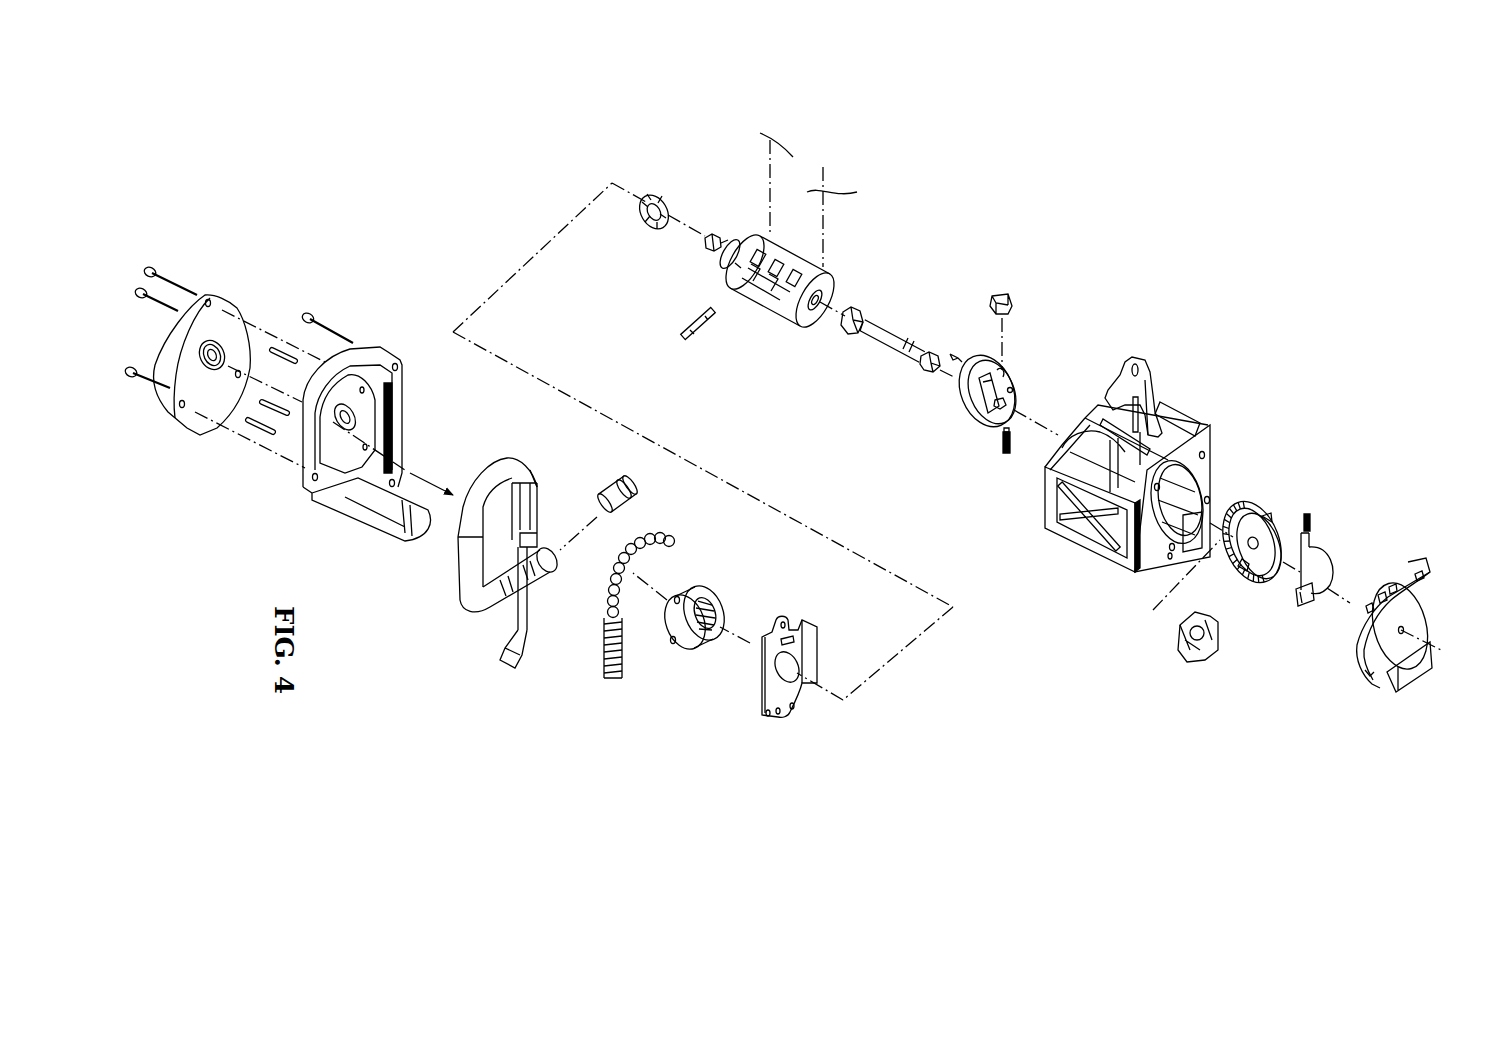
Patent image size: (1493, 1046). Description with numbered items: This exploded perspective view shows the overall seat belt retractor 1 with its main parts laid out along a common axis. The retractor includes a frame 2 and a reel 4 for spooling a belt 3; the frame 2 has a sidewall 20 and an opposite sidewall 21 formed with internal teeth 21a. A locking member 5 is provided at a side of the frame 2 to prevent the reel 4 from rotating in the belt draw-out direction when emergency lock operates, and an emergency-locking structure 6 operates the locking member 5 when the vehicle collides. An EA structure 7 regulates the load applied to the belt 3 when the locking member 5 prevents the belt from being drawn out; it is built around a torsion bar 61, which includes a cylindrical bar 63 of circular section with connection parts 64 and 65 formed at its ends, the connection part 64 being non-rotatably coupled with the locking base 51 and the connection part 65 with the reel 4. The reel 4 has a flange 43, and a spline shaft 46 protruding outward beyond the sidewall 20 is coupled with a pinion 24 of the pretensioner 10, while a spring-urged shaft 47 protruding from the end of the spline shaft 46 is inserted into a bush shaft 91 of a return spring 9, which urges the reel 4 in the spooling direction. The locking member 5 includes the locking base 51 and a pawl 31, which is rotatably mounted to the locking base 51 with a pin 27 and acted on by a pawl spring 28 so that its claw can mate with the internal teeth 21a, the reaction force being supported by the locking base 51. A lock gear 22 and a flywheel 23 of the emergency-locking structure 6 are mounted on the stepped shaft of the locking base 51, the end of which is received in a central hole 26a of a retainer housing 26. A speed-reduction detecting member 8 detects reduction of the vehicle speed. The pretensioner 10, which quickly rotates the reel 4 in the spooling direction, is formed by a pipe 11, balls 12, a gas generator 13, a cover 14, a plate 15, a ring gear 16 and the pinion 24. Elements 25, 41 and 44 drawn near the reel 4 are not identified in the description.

The seat belt retractor 1 is at (960, 732).
The frame 2 is at (1215, 453).
The belt 3 is at (855, 195).
The reel 4 is at (802, 260).
The locking member 5 is at (1030, 245).
The emergency-locking structure 6 is at (1327, 445).
The EA structure 7 is at (947, 223).
The speed-reduction detecting member 8 is at (1168, 640).
The return spring 9 is at (176, 435).
The pretensioner 10 is at (475, 660).
The pipe 11 is at (450, 577).
The balls 12 is at (600, 610).
The gas generator 13 is at (604, 497).
The cover 14 is at (372, 372).
The plate 15 is at (760, 697).
The ring gear 16 is at (675, 655).
The sidewall 20 is at (1040, 468).
The sidewall 21 is at (1150, 568).
The internal teeth 21a is at (1212, 485).
The lock gear 22 is at (1268, 512).
The flywheel 23 is at (1332, 556).
The pinion 24 is at (663, 198).
The pin 25 is at (700, 328).
The retainer housing 26 is at (1423, 603).
The central hole 26a is at (1358, 660).
The pin 27 is at (957, 353).
The pawl spring 28 is at (1003, 452).
The pawl 31 is at (1005, 292).
The rotor 41 is at (742, 282).
The flange 43 is at (754, 240).
The end face 44 is at (810, 318).
The spline shaft 46 is at (722, 262).
The spring-urged shaft 47 is at (708, 243).
The locking base 51 is at (1015, 362).
The torsion bar 61 is at (886, 326).
The cylindrical bar 63 is at (892, 350).
The connection part 64 is at (922, 362).
The connection part 65 is at (850, 330).
The bush shaft 91 is at (214, 345).